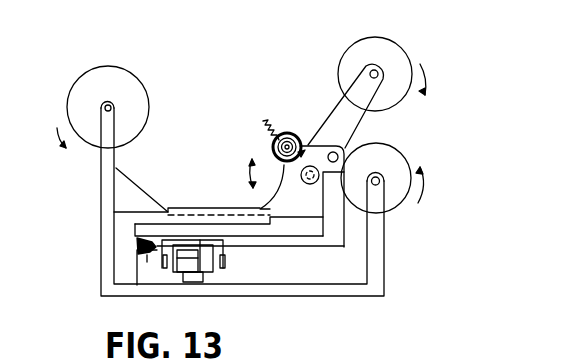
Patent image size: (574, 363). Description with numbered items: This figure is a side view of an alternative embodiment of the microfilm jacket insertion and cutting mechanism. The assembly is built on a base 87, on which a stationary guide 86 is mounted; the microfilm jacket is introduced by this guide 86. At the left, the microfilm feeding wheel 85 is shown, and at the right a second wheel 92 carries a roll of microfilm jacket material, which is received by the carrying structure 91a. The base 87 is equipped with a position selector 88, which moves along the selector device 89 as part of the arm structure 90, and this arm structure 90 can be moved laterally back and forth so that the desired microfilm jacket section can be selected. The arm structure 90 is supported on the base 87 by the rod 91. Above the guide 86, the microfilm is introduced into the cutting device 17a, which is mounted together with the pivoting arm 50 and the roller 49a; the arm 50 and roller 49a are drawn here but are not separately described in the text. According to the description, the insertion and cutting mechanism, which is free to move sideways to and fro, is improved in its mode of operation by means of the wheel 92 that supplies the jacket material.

The cutting device 17a is at (282, 125).
The roller 49a is at (396, 57).
The arm 50 is at (325, 110).
The microfilm feeding wheel 85 is at (133, 89).
The guide 86 is at (172, 207).
The base 87 is at (243, 290).
The position selector 88 is at (152, 259).
The selector device 89 is at (137, 245).
The arm structure 90 is at (147, 258).
The rod 91 is at (136, 231).
The carrying structure 91a is at (367, 249).
The wheel 92 is at (388, 153).